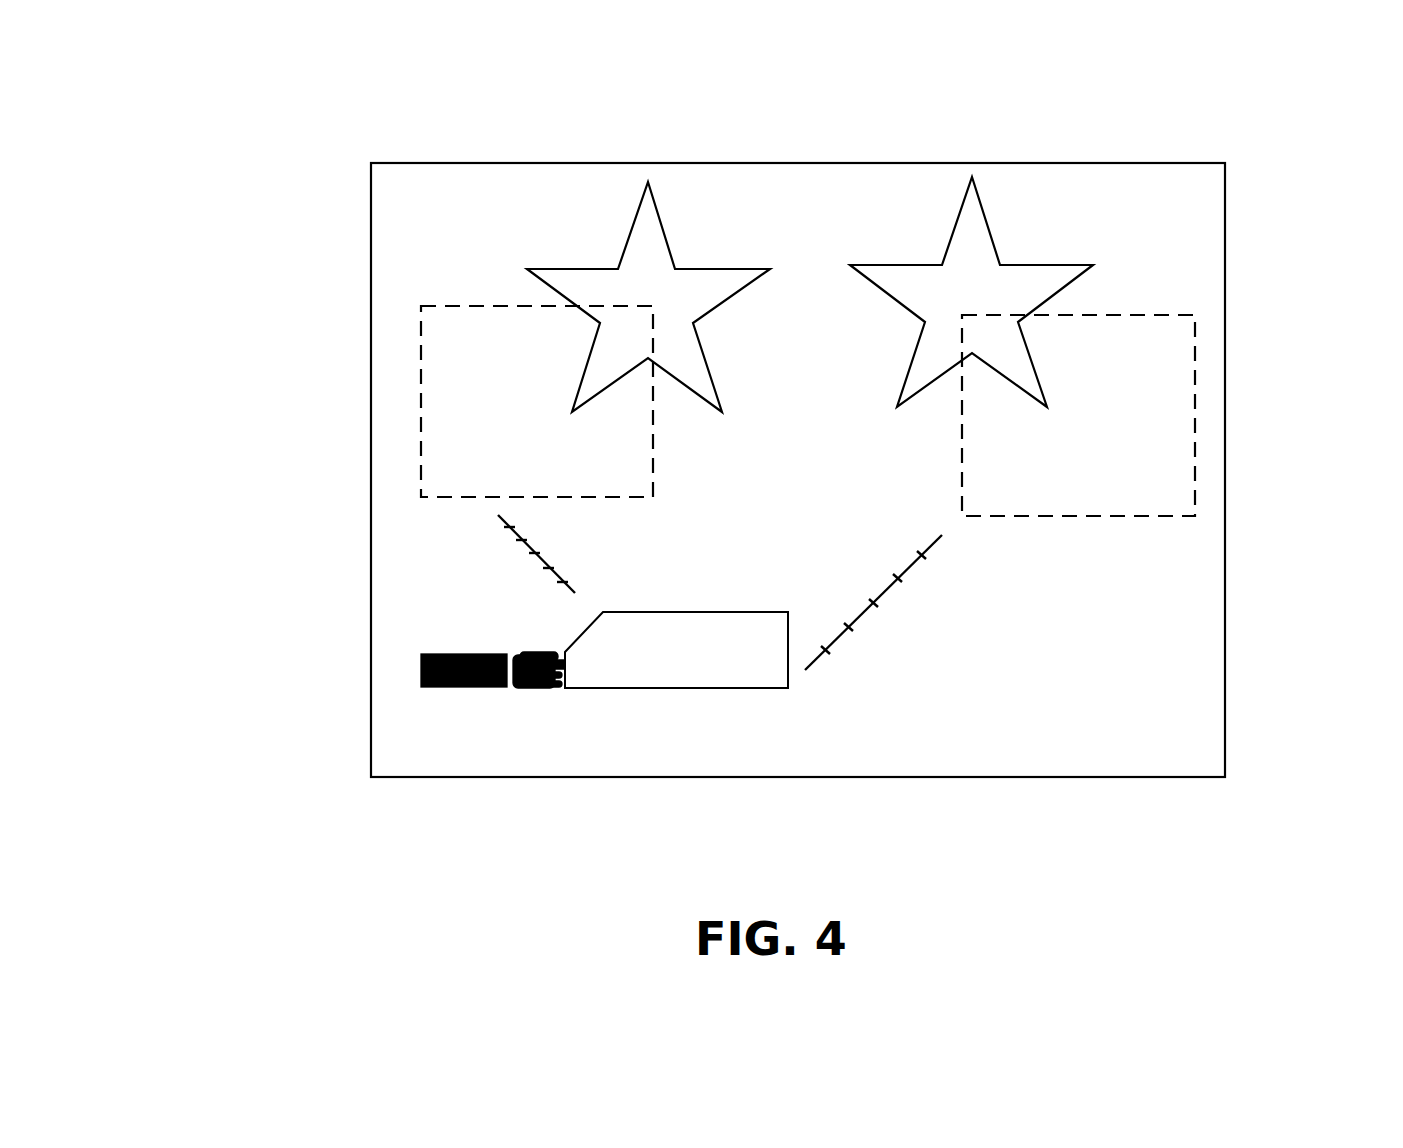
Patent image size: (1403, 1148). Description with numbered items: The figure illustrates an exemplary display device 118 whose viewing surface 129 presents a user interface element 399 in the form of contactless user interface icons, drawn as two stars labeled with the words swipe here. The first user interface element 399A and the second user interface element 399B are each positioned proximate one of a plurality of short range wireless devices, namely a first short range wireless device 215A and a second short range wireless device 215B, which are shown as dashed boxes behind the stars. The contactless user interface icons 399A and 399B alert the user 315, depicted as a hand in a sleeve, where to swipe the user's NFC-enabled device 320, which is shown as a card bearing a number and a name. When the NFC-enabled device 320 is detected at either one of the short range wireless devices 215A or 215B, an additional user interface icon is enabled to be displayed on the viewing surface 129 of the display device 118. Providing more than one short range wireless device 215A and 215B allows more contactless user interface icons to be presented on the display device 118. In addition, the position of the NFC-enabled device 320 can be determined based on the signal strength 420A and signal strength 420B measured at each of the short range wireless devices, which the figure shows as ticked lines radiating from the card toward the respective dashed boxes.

The user interface element 399 is at (330, 109).
The user interface element 399A is at (608, 248).
The user interface element 399B is at (1018, 237).
The display device 118 is at (776, 251).
The viewing surface 129 is at (1098, 727).
The short range wireless device 215A is at (537, 401).
The short range wireless device 215B is at (1049, 488).
The signal strength 420A is at (517, 560).
The signal strength 420B is at (892, 602).
The user 315 is at (418, 664).
The NFC-enabled device 320 is at (677, 688).